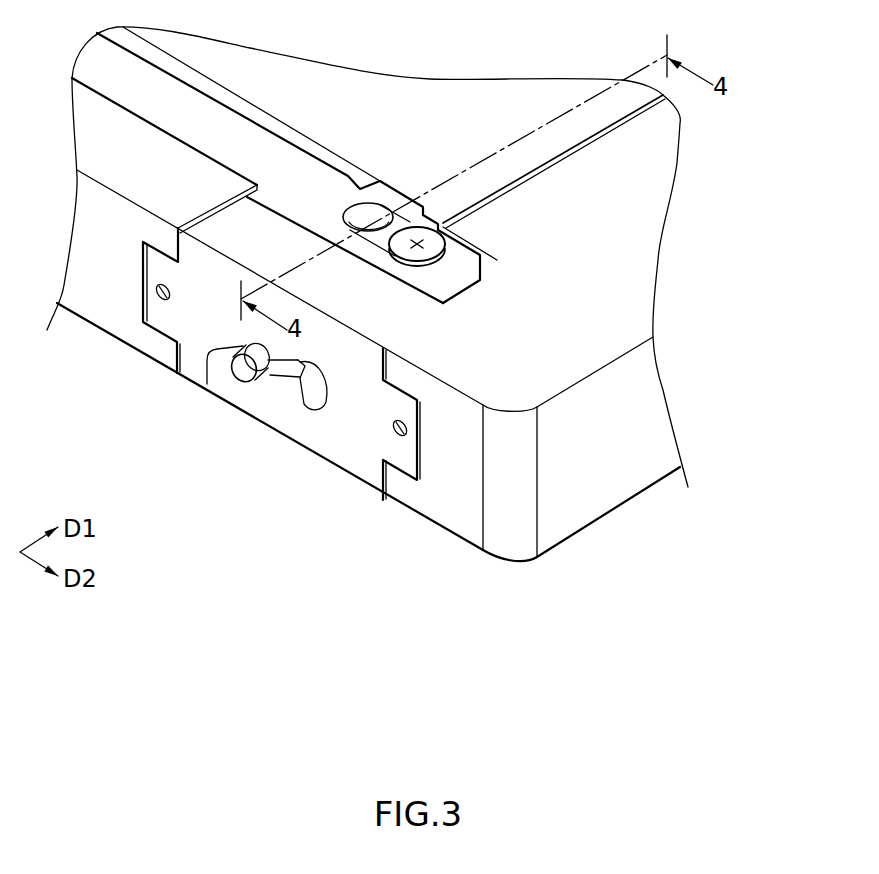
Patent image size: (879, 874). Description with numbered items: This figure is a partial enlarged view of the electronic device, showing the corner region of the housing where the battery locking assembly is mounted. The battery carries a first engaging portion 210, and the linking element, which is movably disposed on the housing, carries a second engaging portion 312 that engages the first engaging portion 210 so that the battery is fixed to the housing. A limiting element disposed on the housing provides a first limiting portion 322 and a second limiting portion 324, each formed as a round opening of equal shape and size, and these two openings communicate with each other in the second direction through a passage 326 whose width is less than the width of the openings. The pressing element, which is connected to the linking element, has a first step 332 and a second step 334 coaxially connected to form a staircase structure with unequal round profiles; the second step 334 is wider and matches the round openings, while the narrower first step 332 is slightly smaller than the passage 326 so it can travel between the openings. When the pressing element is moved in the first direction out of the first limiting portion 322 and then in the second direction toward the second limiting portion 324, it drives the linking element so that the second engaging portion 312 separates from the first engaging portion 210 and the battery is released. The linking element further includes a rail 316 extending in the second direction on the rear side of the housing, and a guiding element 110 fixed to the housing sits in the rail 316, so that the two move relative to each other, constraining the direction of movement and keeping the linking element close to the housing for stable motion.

The guiding element 110 is at (432, 252).
The first engaging portion 210 is at (357, 175).
The second engaging portion 312 is at (398, 197).
The rail 316 is at (377, 232).
The first limiting portion 322 is at (206, 385).
The second limiting portion 324 is at (320, 405).
The passage 326 is at (285, 395).
The first step 332 is at (228, 382).
The second step 334 is at (256, 390).